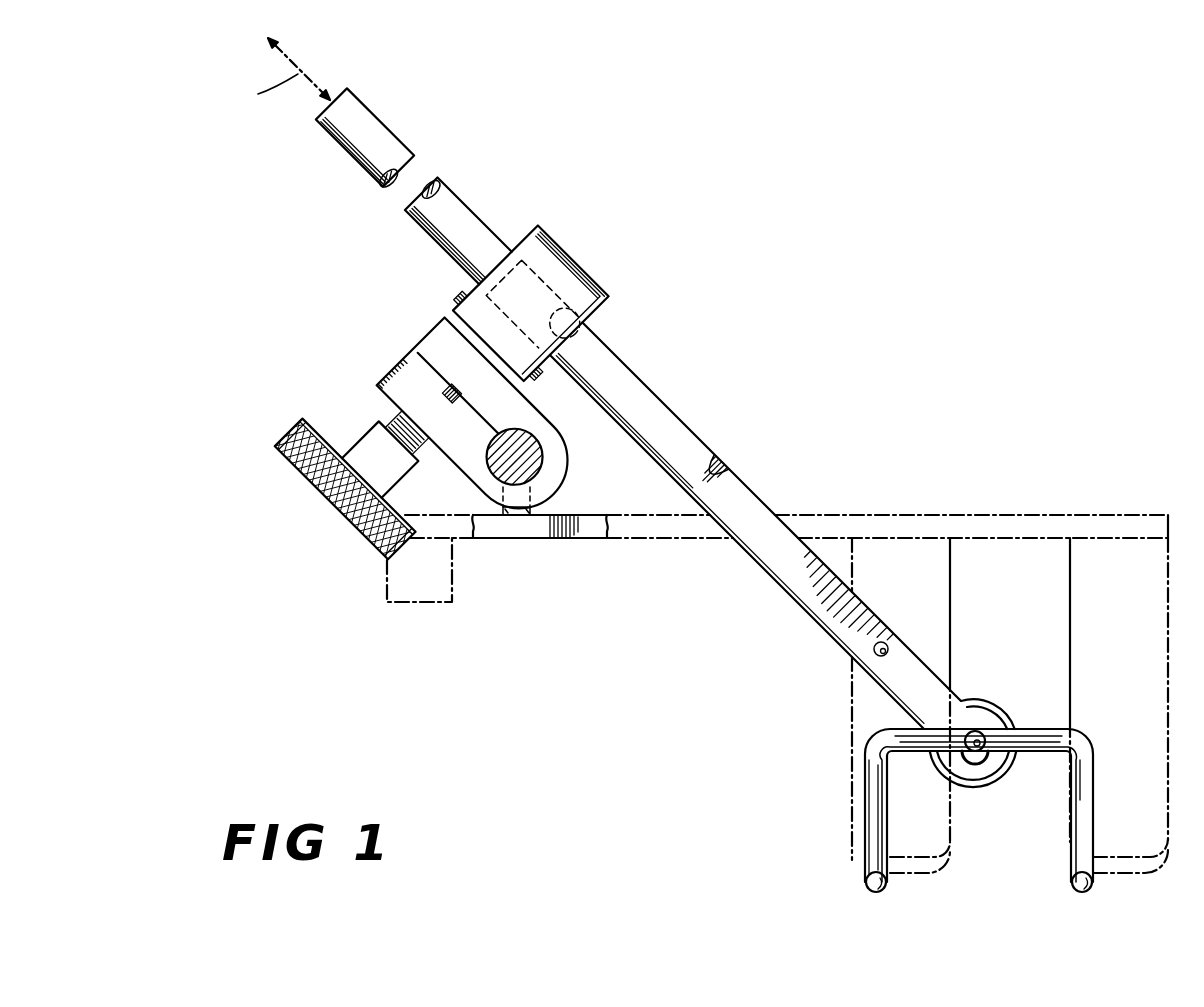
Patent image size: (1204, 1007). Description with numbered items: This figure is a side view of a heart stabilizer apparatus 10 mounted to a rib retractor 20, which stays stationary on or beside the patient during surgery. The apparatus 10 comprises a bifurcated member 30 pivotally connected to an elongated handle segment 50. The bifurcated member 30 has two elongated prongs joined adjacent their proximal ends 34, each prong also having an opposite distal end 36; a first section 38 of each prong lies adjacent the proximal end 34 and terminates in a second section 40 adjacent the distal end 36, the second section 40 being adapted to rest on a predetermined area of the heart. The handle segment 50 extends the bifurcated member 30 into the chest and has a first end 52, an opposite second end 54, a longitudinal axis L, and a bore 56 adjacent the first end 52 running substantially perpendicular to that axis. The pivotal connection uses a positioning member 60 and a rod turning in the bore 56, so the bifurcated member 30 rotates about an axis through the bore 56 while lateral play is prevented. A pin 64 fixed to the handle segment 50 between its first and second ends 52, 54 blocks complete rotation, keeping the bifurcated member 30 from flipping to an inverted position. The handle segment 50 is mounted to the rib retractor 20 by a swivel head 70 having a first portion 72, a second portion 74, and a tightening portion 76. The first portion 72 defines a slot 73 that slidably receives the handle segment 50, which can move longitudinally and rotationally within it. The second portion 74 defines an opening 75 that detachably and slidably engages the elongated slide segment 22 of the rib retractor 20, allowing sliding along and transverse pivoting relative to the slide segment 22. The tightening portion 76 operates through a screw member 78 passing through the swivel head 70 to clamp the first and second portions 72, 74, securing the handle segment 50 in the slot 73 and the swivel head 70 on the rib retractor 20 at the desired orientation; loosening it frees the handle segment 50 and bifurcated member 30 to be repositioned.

The apparatus 10 is at (693, 465).
The rib retractor 20 is at (537, 540).
The slide segment 22 is at (527, 445).
The bifurcated member 30 is at (862, 738).
The proximal end 34 is at (1040, 727).
The distal end 36 is at (868, 884).
The first section 38 is at (1053, 743).
The second section 40 is at (863, 795).
The handle segment 50 is at (447, 193).
The first end 52 is at (982, 773).
The second end 54 is at (316, 121).
The bore 56 is at (957, 770).
The positioning member 60 is at (970, 701).
The pin 64 is at (876, 656).
The swivel head 70 is at (429, 387).
The first portion 72 is at (550, 258).
The slot 73 is at (603, 341).
The second portion 74 is at (392, 378).
The opening 75 is at (533, 463).
The tightening portion 76 is at (298, 422).
The screw member 78 is at (387, 417).